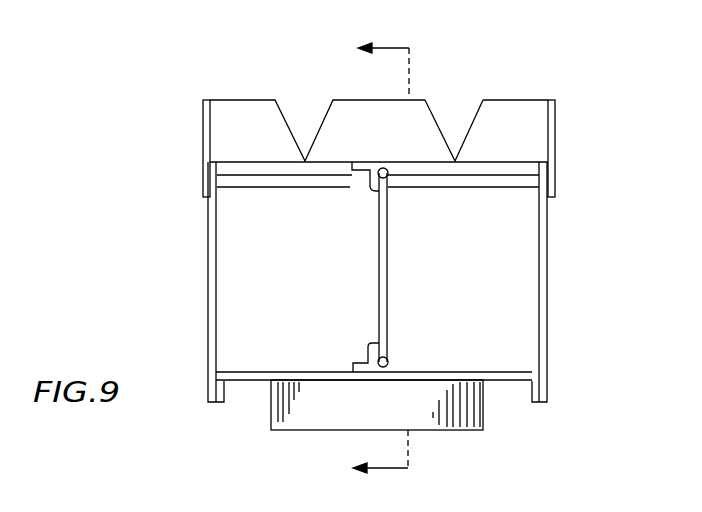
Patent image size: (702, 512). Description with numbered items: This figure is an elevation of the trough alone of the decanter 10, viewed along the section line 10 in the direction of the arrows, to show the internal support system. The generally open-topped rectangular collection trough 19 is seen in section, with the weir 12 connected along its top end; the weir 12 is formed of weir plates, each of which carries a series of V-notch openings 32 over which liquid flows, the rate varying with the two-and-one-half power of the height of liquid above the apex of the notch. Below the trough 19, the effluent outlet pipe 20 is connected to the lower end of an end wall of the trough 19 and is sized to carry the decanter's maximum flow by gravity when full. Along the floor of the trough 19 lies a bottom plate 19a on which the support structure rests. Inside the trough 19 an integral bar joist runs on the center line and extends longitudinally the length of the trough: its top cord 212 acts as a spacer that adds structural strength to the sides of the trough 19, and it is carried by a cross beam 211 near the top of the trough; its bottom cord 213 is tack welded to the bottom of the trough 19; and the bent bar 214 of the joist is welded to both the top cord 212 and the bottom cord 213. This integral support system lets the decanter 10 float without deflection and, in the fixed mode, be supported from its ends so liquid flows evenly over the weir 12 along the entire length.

The decanter 10 is at (365, 259).
The weir 12 is at (517, 100).
The openings 32 is at (468, 125).
The collection trough 19 is at (471, 299).
The bottom plate 19a is at (547, 402).
The effluent outlet pipe 20 is at (390, 421).
The cross beam 211 is at (513, 188).
The top cord of bar joist 212 is at (352, 178).
The bottom cord of bar joist 213 is at (347, 367).
The bent bar of joist 214 is at (390, 275).